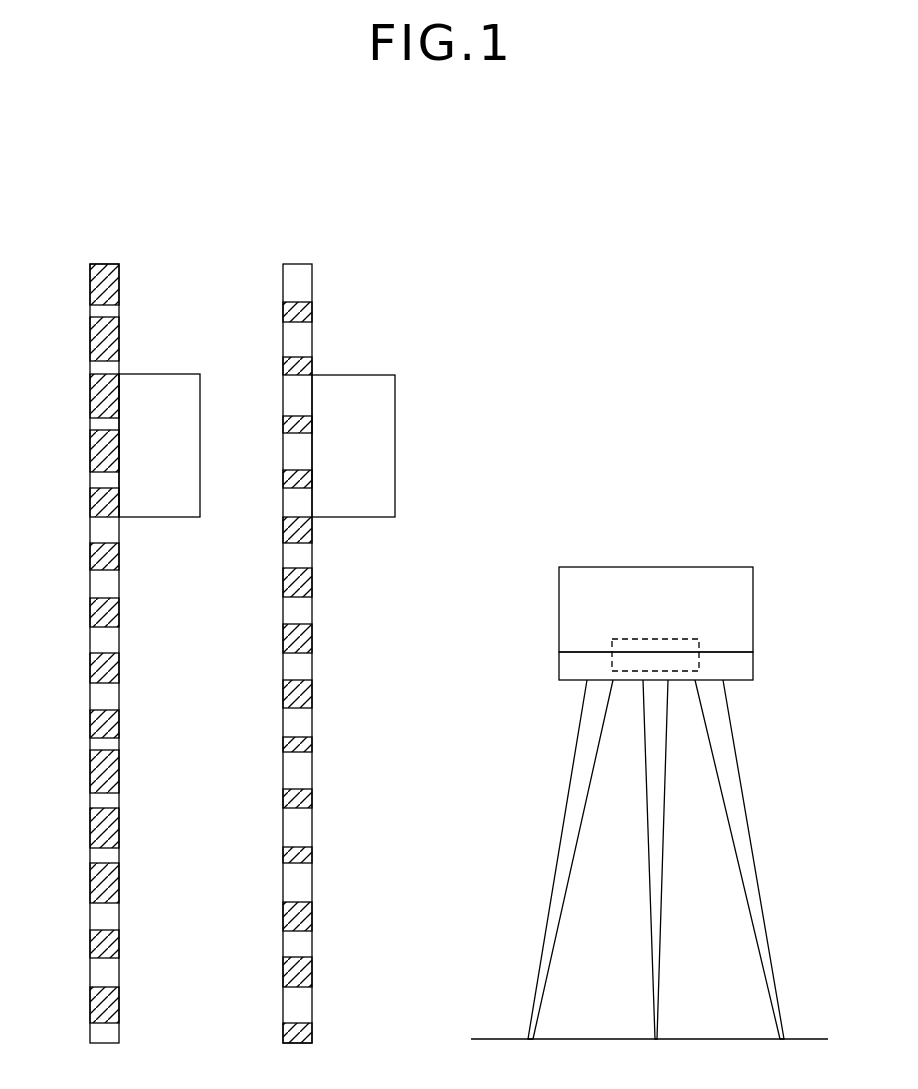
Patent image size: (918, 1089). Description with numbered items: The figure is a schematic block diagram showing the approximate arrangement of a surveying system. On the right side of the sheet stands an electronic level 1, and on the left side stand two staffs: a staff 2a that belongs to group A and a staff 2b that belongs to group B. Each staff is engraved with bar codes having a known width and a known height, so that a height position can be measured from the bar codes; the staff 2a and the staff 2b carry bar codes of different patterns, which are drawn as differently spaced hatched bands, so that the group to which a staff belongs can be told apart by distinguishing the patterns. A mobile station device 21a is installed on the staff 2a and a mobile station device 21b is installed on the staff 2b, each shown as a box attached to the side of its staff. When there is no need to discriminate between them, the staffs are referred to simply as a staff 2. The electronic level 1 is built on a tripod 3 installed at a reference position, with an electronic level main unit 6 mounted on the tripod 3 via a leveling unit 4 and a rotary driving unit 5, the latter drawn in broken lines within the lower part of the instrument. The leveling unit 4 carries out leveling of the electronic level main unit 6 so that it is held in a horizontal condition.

The electronic level 1 is at (688, 568).
The staff 2 is at (88, 314).
The staff 2a is at (119, 288).
The staff 2b is at (312, 281).
The mobile station device 21a is at (175, 374).
The mobile station device 21b is at (381, 375).
The tripod 3 is at (738, 767).
The leveling unit 4 is at (754, 668).
The rotary driving unit 5 is at (632, 637).
The electronic level main unit 6 is at (753, 598).